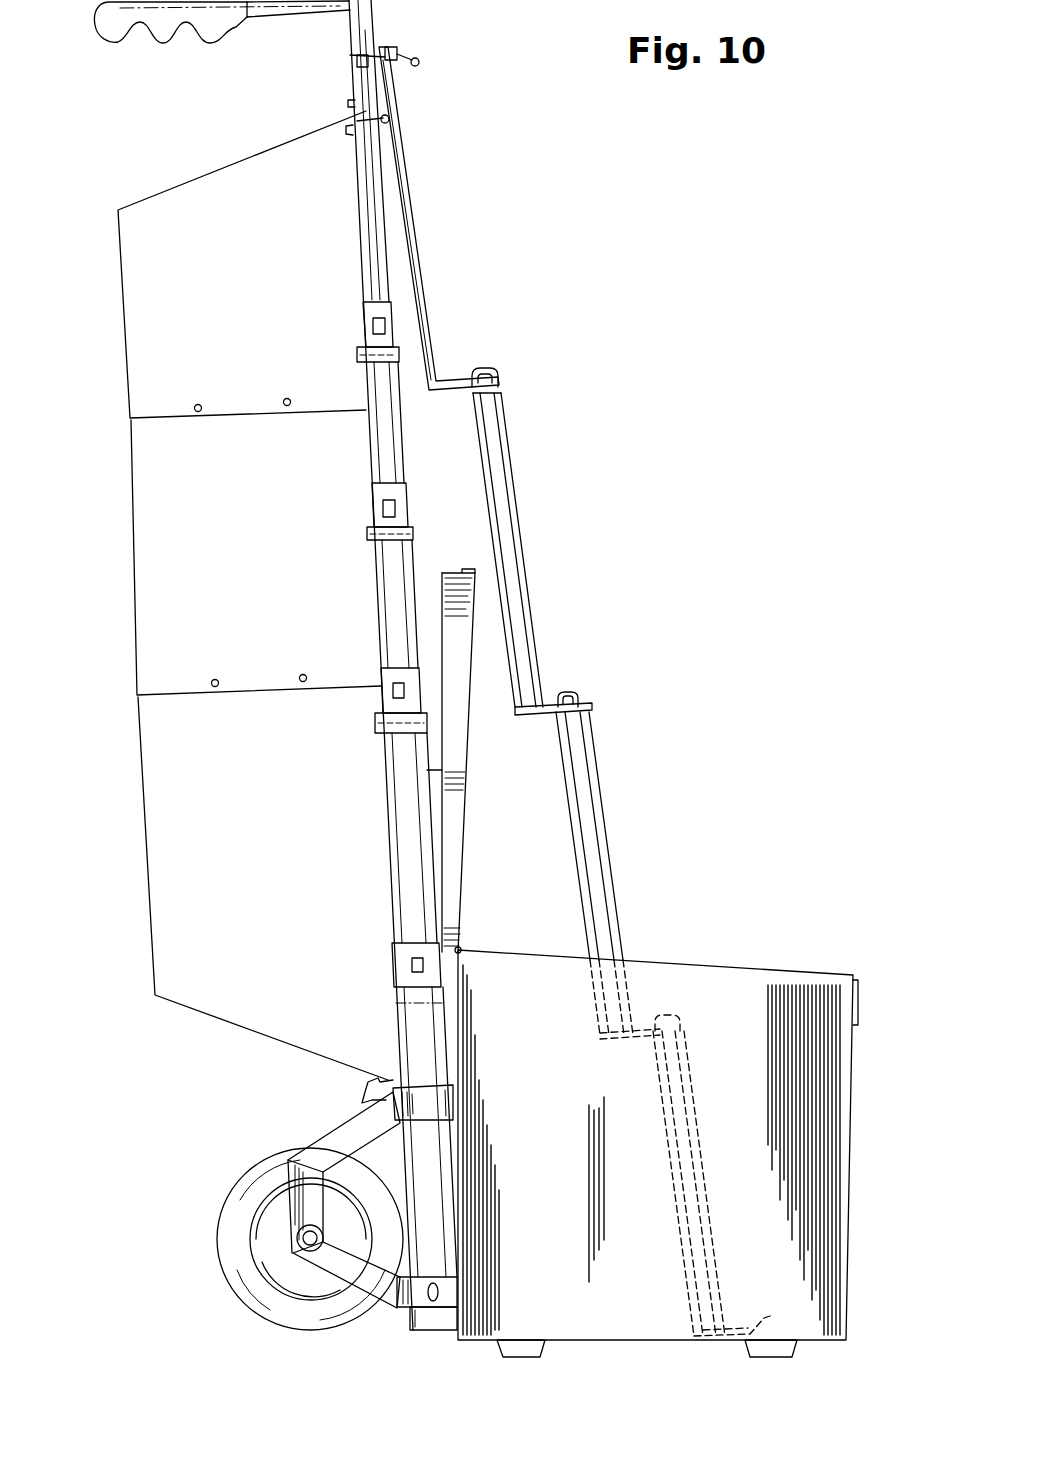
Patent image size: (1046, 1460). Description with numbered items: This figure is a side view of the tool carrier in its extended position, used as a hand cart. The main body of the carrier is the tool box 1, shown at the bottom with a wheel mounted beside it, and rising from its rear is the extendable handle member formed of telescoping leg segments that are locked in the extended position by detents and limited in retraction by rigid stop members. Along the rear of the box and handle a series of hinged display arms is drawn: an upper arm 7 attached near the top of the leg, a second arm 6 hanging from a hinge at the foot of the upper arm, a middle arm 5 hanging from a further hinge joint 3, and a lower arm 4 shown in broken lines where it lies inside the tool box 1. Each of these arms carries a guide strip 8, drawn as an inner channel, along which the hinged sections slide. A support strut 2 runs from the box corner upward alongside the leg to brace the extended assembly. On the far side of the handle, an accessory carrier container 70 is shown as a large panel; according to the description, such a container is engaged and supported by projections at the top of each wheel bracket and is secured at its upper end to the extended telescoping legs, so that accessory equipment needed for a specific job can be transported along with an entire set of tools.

The container body 1 is at (820, 1142).
The support strut 2 is at (465, 823).
The hinge joint 3 is at (463, 767).
The lower arm section 4 is at (682, 1042).
The middle arm section 5 is at (603, 797).
The second arm section 6 is at (515, 480).
The upper arm section 7 is at (413, 220).
The guide strip 8 is at (502, 527).
The accessory carrier container 70 is at (170, 834).